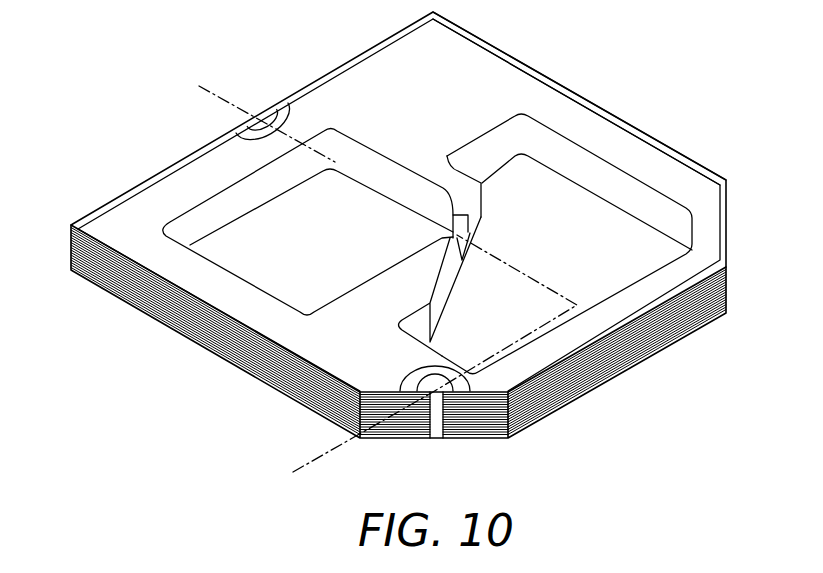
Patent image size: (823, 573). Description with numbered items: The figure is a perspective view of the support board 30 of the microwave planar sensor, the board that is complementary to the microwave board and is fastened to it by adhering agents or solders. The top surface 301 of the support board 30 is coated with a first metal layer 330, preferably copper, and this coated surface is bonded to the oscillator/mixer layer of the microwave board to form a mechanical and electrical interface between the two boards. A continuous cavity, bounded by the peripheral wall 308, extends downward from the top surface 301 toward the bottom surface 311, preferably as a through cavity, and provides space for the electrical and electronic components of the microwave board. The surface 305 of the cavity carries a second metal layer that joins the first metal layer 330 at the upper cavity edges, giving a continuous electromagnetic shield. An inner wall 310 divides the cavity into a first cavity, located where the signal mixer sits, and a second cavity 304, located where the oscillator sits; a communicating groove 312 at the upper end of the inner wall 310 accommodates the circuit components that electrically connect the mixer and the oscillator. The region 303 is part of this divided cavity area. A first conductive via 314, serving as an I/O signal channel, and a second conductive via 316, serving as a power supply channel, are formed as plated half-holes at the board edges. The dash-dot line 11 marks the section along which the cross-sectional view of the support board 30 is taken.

The support board 30 is at (99, 108).
The section line 11 is at (379, 272).
The top surface 301 is at (485, 56).
The first metal layer 330 is at (576, 102).
The left pocket floor 303 is at (223, 252).
The second cavity 304 is at (616, 230).
The surface of the continuous cavity 305 is at (177, 225).
The peripheral wall 308 is at (618, 132).
The inner wall 310 is at (418, 325).
The bottom surface 311 is at (721, 318).
The communicating groove 312 is at (468, 229).
The first conductive via 314 is at (253, 118).
The second conductive via 316 is at (436, 432).